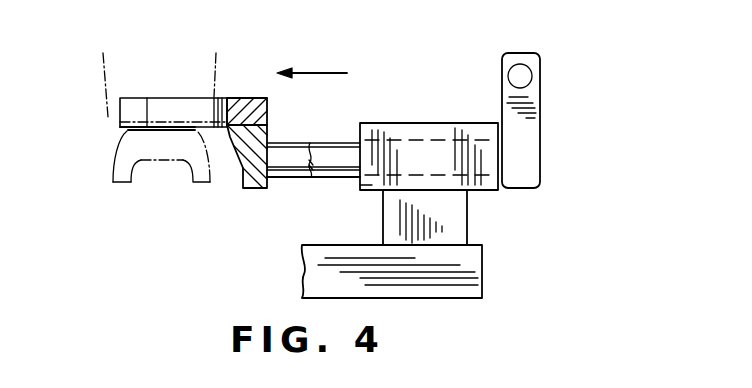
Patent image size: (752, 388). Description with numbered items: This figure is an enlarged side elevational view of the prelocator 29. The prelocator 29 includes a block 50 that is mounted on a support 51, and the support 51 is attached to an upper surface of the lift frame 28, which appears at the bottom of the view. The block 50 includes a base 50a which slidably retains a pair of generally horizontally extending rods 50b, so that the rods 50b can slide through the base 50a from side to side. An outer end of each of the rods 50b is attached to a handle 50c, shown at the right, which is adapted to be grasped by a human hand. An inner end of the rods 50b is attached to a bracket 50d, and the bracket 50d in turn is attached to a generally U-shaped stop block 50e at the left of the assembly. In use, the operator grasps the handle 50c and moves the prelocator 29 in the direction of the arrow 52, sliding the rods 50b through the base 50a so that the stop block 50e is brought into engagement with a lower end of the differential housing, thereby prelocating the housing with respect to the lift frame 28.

The lift frame 28 is at (476, 272).
The prelocator 29 is at (572, 53).
The block 50 is at (421, 123).
The base 50a is at (368, 190).
The rods 50b is at (325, 147).
The handle 50c is at (530, 130).
The bracket 50d is at (251, 182).
The stop block 50e is at (252, 98).
The support 51 is at (456, 220).
The arrow 52 is at (318, 73).